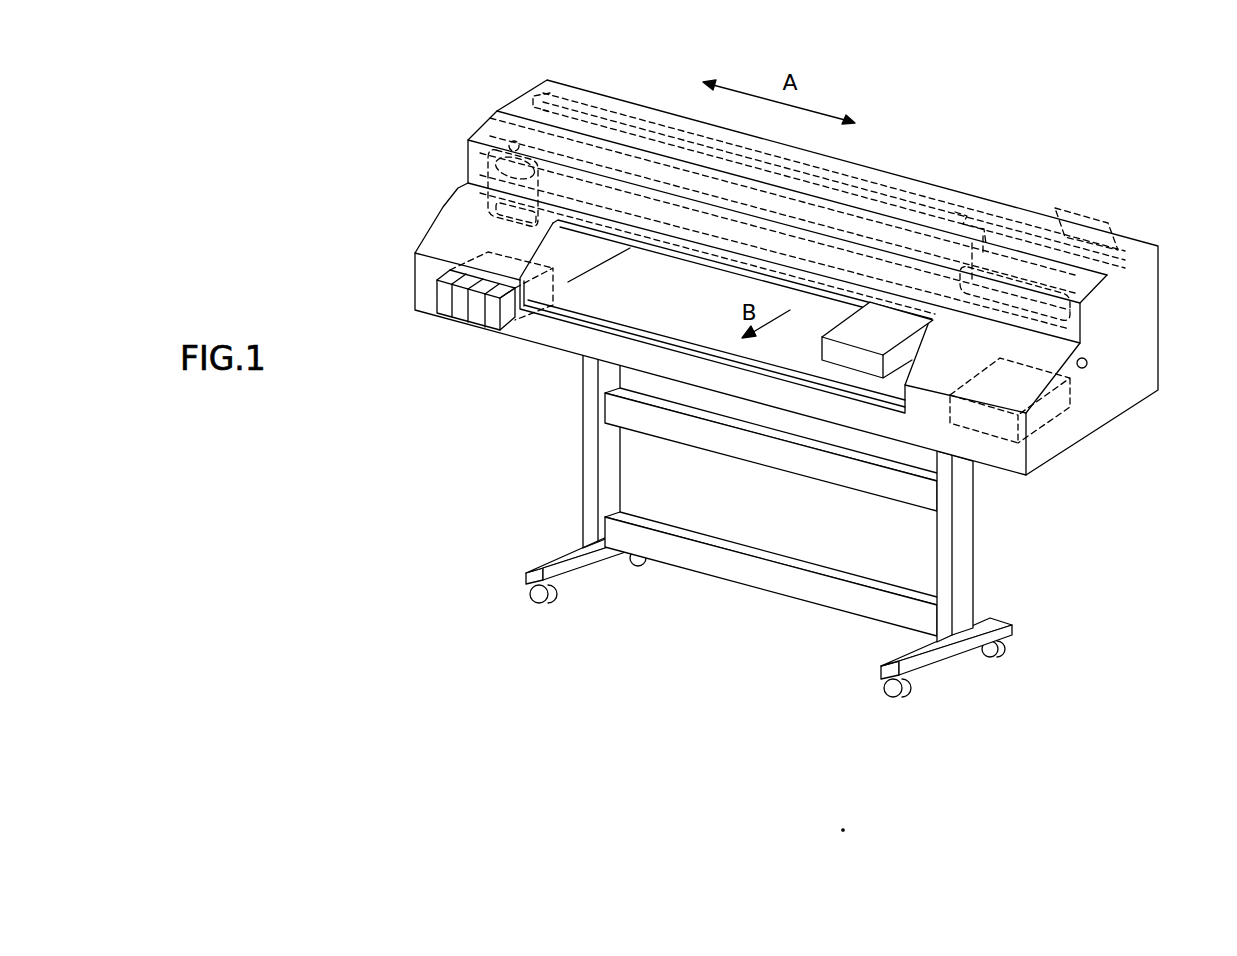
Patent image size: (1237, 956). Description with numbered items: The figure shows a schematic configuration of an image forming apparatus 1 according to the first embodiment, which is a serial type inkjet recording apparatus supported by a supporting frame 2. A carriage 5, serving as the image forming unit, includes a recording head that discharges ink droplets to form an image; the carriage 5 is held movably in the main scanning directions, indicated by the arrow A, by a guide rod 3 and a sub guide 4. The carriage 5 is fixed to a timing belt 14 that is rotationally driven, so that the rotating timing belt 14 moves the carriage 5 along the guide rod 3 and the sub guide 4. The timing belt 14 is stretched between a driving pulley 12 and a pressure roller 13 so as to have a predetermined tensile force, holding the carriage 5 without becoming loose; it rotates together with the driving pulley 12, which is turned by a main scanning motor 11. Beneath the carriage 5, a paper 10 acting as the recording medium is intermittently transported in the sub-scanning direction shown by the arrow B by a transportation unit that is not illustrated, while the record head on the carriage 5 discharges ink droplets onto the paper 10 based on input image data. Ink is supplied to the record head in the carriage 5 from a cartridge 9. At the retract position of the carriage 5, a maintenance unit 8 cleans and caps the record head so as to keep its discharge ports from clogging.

The image forming apparatus 1 is at (878, 136).
The supporting frame 2 is at (570, 477).
The guide rod 3 is at (702, 268).
The sub guide 4 is at (1033, 208).
The carriage 5 is at (875, 330).
The maintenance unit 8 is at (1055, 410).
The cartridge 9 is at (443, 305).
The paper 10 is at (632, 277).
The main scanning motor 11 is at (468, 133).
The driving pulley 12 is at (511, 146).
The pressure roller 13 is at (1137, 246).
The timing belt 14 is at (1083, 232).